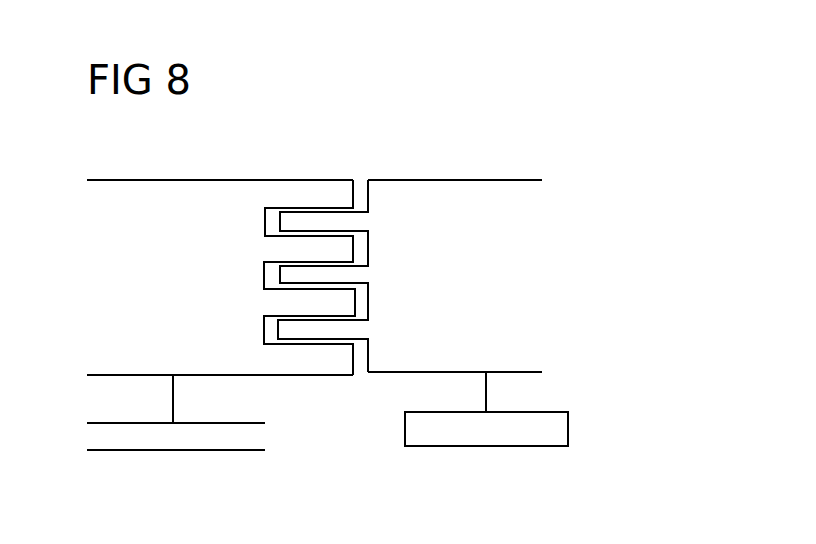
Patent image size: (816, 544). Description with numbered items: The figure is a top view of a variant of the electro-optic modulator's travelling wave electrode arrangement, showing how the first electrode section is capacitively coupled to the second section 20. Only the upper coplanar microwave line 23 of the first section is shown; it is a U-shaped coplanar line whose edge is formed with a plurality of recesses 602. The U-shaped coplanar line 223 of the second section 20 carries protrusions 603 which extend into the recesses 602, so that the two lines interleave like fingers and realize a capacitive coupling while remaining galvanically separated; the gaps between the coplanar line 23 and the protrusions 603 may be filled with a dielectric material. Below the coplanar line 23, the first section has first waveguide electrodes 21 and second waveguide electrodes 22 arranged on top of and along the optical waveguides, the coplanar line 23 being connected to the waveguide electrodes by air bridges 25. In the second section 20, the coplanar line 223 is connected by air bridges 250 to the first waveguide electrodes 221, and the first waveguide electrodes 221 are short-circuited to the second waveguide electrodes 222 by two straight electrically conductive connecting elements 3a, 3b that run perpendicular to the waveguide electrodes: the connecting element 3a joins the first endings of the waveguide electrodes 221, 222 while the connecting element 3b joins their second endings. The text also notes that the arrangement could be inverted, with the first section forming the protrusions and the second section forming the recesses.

The second section 20 is at (562, 156).
The first coplanar microwave line 23 is at (205, 193).
The U-shaped coplanar line 223 is at (461, 197).
The recesses 602 is at (268, 207).
The protrusions 603 is at (303, 219).
The first waveguide electrodes 21 is at (246, 422).
The air bridges 25 is at (172, 407).
The second waveguide electrodes 22 is at (229, 452).
The first waveguide electrodes 221 is at (422, 412).
The air bridges 250 is at (488, 395).
The second waveguide electrodes 222 is at (447, 448).
The connecting element 3a is at (404, 432).
The connecting element 3b is at (570, 430).